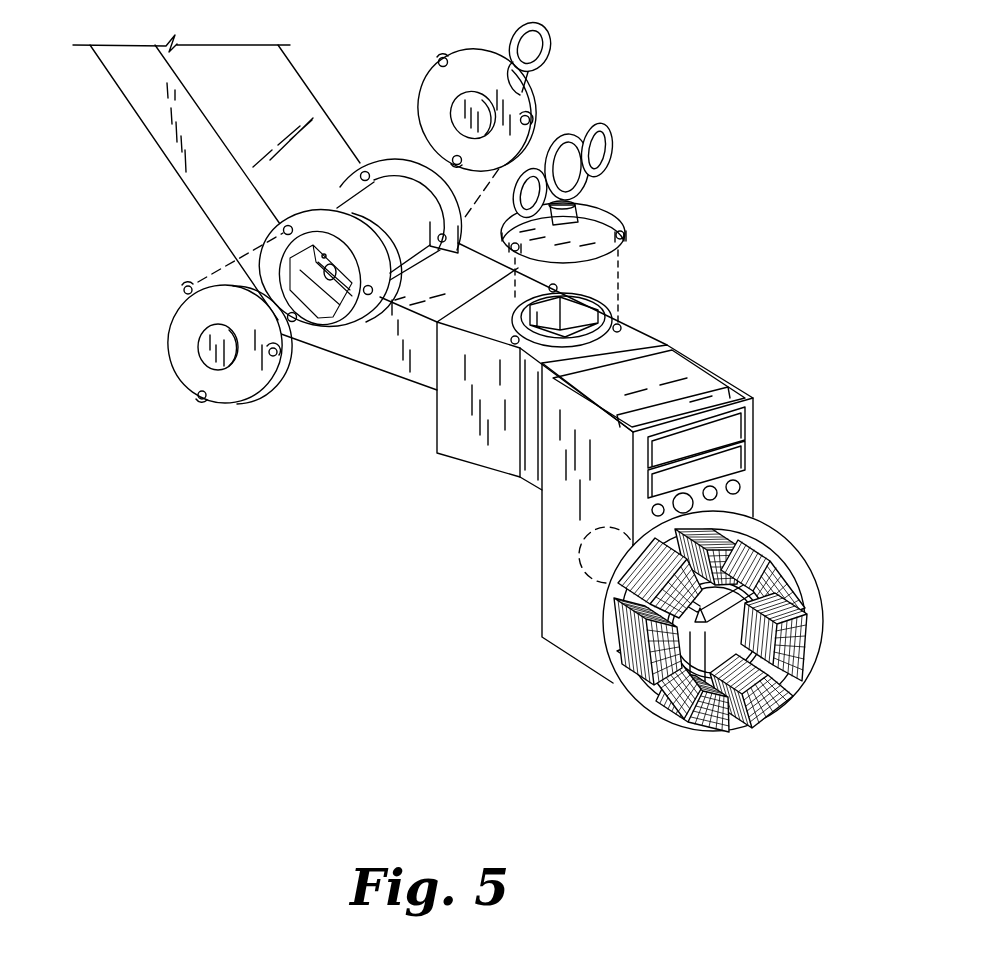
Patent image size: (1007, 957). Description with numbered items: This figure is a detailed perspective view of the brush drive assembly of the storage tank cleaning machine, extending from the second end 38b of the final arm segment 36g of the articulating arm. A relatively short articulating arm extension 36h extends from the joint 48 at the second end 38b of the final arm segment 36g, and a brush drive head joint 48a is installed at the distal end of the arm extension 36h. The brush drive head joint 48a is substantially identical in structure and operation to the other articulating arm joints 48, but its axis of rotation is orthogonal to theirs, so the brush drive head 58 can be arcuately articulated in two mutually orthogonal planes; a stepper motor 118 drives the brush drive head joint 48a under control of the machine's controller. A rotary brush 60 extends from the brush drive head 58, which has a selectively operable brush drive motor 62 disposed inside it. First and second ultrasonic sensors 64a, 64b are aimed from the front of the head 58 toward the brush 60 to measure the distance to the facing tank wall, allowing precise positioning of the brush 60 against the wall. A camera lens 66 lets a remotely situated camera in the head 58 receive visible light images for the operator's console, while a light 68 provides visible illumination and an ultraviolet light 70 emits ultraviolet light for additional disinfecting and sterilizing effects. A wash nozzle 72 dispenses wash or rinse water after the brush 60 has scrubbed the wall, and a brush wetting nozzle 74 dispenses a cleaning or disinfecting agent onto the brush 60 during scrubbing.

The final arm segment 36g is at (188, 186).
The articulating arm extension 36h is at (370, 368).
The second end 38b is at (360, 128).
The joint 48 is at (201, 427).
The brush drive head joint 48a is at (652, 195).
The stepper motor 118 is at (620, 343).
The brush drive head 58 is at (652, 514).
The rotary brush 60 is at (726, 649).
The brush drive motor 62 is at (597, 557).
The first ultrasonic sensor 64a is at (742, 490).
The second ultrasonic sensor 64b is at (648, 507).
The camera lens 66 is at (718, 500).
The light 68 is at (755, 458).
The ultraviolet light 70 is at (753, 415).
The wash nozzle 72 is at (683, 513).
The brush wetting nozzle 74 is at (795, 573).